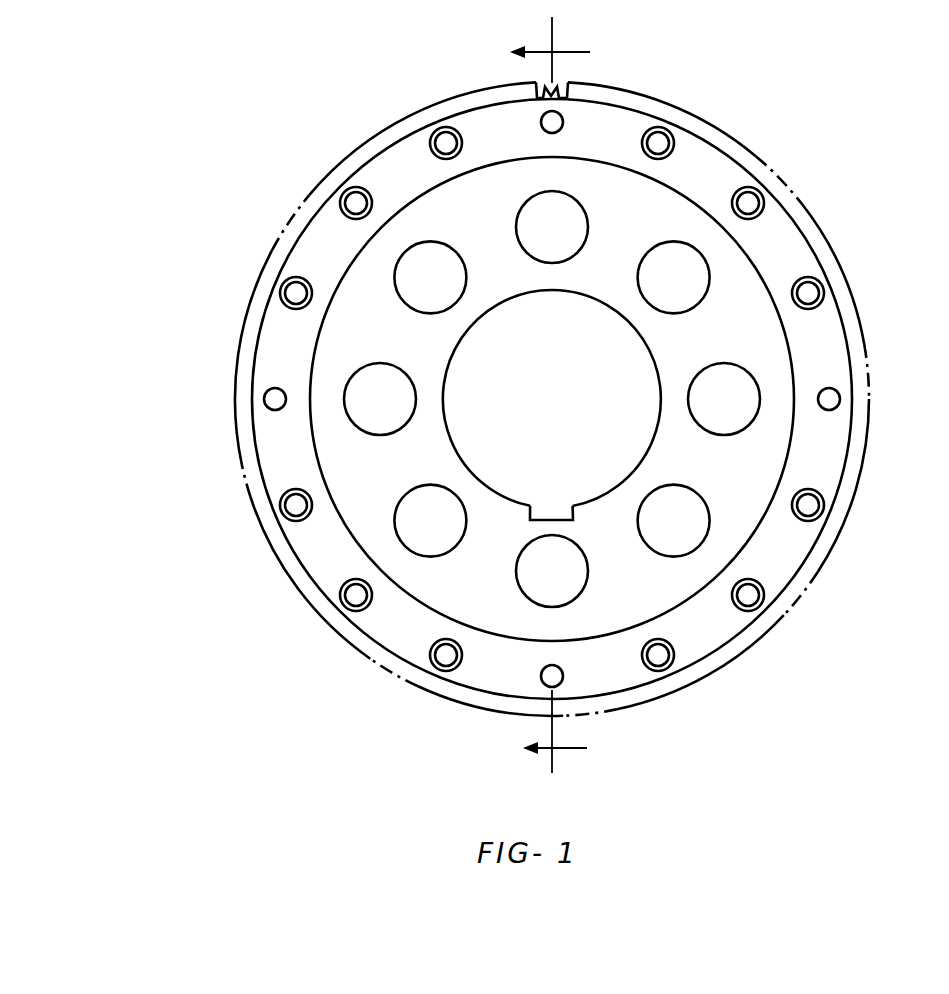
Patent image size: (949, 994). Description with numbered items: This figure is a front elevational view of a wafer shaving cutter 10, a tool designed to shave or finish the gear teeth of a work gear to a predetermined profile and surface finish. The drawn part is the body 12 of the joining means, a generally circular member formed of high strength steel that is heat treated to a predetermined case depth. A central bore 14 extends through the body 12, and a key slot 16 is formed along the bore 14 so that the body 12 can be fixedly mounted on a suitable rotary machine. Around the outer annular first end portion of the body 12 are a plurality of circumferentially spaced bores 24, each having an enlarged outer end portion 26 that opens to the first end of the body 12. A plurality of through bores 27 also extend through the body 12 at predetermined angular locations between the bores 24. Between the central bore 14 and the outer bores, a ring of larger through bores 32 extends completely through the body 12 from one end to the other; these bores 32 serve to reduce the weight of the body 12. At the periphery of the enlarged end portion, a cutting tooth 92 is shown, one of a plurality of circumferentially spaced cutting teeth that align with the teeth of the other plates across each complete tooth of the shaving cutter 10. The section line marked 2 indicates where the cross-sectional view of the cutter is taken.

The wafer shaving cutter 10 is at (286, 123).
The body 12 is at (775, 232).
The central bore 14 is at (648, 455).
The key slot 16 is at (565, 506).
The bore 24 is at (828, 283).
The enlarged outer end portion 26 is at (440, 145).
The through bore 27 is at (563, 121).
The through bore 32 is at (404, 288).
The cutting tooth 92 is at (536, 84).
The section line 2- 2 is at (559, 395).